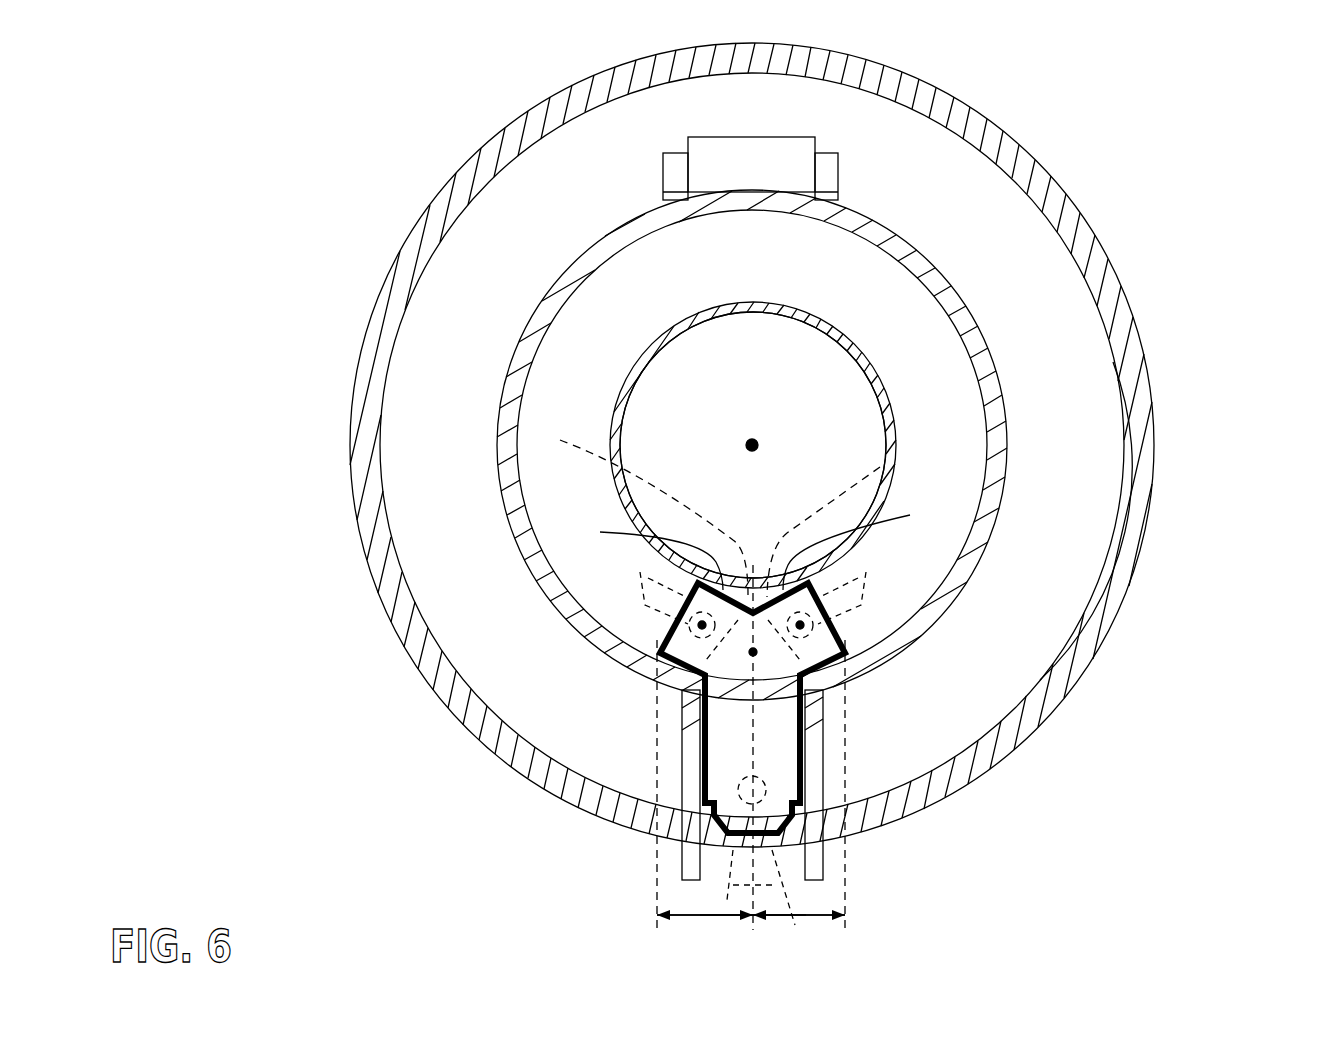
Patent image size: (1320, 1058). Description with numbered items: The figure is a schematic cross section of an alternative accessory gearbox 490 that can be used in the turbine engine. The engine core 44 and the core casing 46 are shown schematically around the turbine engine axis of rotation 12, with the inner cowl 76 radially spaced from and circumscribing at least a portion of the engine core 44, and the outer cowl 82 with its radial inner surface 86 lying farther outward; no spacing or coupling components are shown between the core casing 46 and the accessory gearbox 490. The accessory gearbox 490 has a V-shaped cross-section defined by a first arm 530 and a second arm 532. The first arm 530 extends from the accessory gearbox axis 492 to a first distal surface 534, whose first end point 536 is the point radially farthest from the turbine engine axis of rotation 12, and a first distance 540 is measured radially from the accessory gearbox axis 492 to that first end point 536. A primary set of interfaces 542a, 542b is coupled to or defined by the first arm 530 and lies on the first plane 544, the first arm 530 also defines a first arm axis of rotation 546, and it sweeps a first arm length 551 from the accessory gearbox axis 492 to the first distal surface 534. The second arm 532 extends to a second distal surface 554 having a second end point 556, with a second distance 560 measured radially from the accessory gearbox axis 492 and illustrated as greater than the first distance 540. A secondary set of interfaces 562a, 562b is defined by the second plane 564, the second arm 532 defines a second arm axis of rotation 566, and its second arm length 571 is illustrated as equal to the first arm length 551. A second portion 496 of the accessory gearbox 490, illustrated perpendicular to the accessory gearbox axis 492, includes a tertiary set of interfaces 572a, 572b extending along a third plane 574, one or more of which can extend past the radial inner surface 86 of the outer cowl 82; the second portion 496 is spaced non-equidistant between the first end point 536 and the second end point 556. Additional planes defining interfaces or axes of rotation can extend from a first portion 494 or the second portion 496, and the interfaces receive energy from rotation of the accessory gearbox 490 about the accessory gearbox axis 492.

The turbine engine axis of rotation 12 is at (752, 445).
The engine core 44 is at (850, 390).
The core casing 46 is at (893, 408).
The inner cowl 76 is at (1010, 468).
The outer cowl 82 is at (1123, 608).
The radial inner surface 86 is at (383, 493).
The accessory gearbox 490 is at (808, 748).
The accessory gearbox axis 492 is at (822, 700).
The first portion 494 is at (753, 652).
The second portion 496 is at (688, 712).
The first arm 530 is at (910, 515).
The second arm 532 is at (600, 532).
The first distal surface 534 is at (833, 622).
The first end point 536 is at (832, 668).
The first distance 540 is at (813, 917).
The primary interface 542a is at (832, 603).
The primary interface 542b is at (850, 647).
The first plane 544 is at (928, 541).
The first arm axis of rotation 546 is at (838, 658).
The first arm length 551 is at (880, 467).
The second distal surface 554 is at (662, 620).
The second end point 556 is at (703, 680).
The second distance 560 is at (690, 917).
The secondary interface 562a is at (655, 585).
The secondary interface 562b is at (740, 655).
The second plane 564 is at (640, 568).
The second arm axis of rotation 566 is at (702, 625).
The second arm length 571 is at (560, 440).
The tertiary interface 572a is at (789, 937).
The tertiary interface 572b is at (725, 937).
The third plane 574 is at (660, 705).